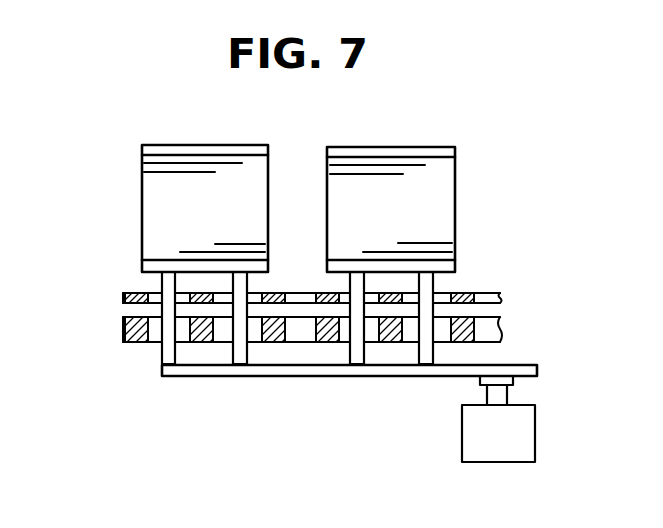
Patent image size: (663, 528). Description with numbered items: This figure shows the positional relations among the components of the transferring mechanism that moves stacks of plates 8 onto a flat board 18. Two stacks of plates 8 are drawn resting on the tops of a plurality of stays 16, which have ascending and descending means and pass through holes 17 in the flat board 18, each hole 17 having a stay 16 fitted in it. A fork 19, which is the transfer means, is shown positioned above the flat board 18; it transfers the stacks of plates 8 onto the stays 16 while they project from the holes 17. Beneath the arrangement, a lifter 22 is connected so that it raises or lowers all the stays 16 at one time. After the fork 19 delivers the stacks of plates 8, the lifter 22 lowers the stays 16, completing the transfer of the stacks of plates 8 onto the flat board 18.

The stacks of plates 8 is at (152, 210).
The stays 16 is at (173, 350).
The holes 17 is at (157, 332).
The flat board 18 is at (123, 333).
The fork 19 is at (143, 292).
The lifter 22 is at (468, 436).